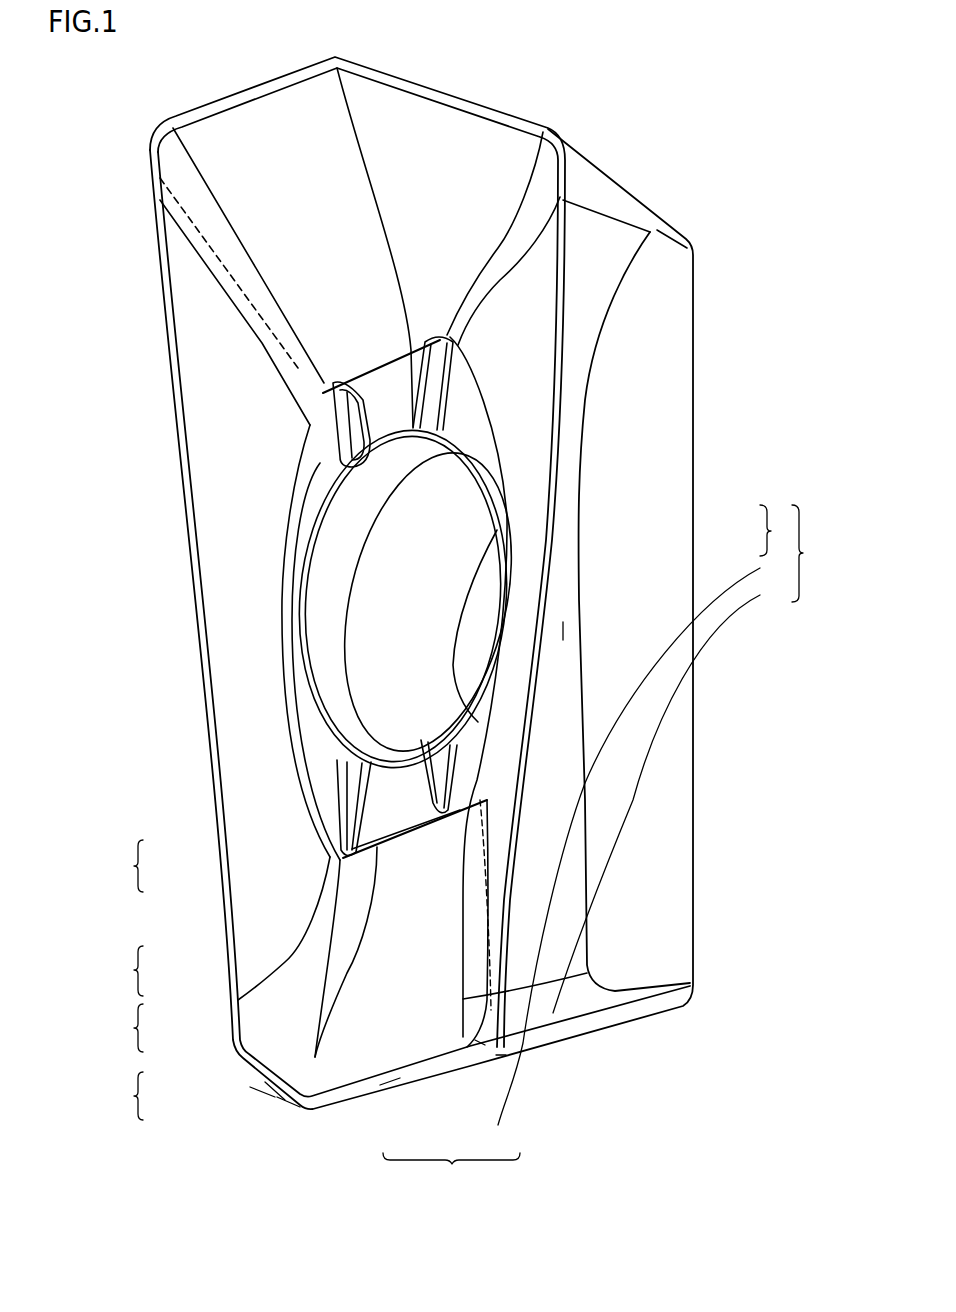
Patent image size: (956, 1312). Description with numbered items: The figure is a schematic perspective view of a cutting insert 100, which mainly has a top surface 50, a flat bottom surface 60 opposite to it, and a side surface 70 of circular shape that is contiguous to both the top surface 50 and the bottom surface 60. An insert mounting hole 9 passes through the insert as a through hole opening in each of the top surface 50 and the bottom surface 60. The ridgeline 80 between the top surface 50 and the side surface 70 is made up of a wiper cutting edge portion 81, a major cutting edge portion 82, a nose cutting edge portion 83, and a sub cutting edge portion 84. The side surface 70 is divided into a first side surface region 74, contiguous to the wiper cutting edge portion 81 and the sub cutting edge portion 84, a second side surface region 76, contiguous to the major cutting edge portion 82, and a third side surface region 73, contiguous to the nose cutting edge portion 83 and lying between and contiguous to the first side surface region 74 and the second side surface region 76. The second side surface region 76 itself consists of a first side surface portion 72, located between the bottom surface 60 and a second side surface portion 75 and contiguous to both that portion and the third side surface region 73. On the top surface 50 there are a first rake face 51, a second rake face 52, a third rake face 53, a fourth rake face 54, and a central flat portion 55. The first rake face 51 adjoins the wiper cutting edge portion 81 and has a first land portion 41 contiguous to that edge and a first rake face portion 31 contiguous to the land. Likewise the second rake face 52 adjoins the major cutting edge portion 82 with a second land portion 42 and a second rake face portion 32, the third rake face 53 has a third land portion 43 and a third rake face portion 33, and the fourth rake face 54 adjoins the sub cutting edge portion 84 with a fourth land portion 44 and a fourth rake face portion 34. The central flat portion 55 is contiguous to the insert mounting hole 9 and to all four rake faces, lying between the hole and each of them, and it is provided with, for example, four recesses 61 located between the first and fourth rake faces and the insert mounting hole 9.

The cutting insert 100 is at (614, 116).
The insert mounting hole 9 is at (323, 638).
The recess 61 is at (350, 433).
The bottom surface 60 is at (695, 892).
The side surface 70 is at (809, 553).
The first side surface portion 72 is at (650, 537).
The third side surface region 73 is at (673, 796).
The first side surface region 74 is at (646, 839).
The second side surface portion 75 is at (563, 622).
The second side surface region 76 is at (777, 530).
The top surface 50 is at (108, 832).
The first rake face 51 is at (125, 1028).
The second rake face 52 is at (125, 866).
The third rake face 53 is at (125, 971).
The fourth rake face 54 is at (125, 1096).
The central flat portion 55 is at (510, 827).
The first rake face portion 31 is at (347, 1047).
The second rake face portion 32 is at (500, 797).
The third rake face portion 33 is at (477, 980).
The fourth rake face portion 34 is at (277, 1095).
The first land portion 41 is at (285, 1060).
The second land portion 42 is at (380, 830).
The third land portion 43 is at (463, 1033).
The fourth land portion 44 is at (275, 1097).
The ridgeline 80 is at (451, 1170).
The wiper cutting edge portion 81 is at (393, 1080).
The major cutting edge portion 82 is at (501, 1062).
The nose cutting edge portion 83 is at (480, 1047).
The sub cutting edge portion 84 is at (277, 1097).